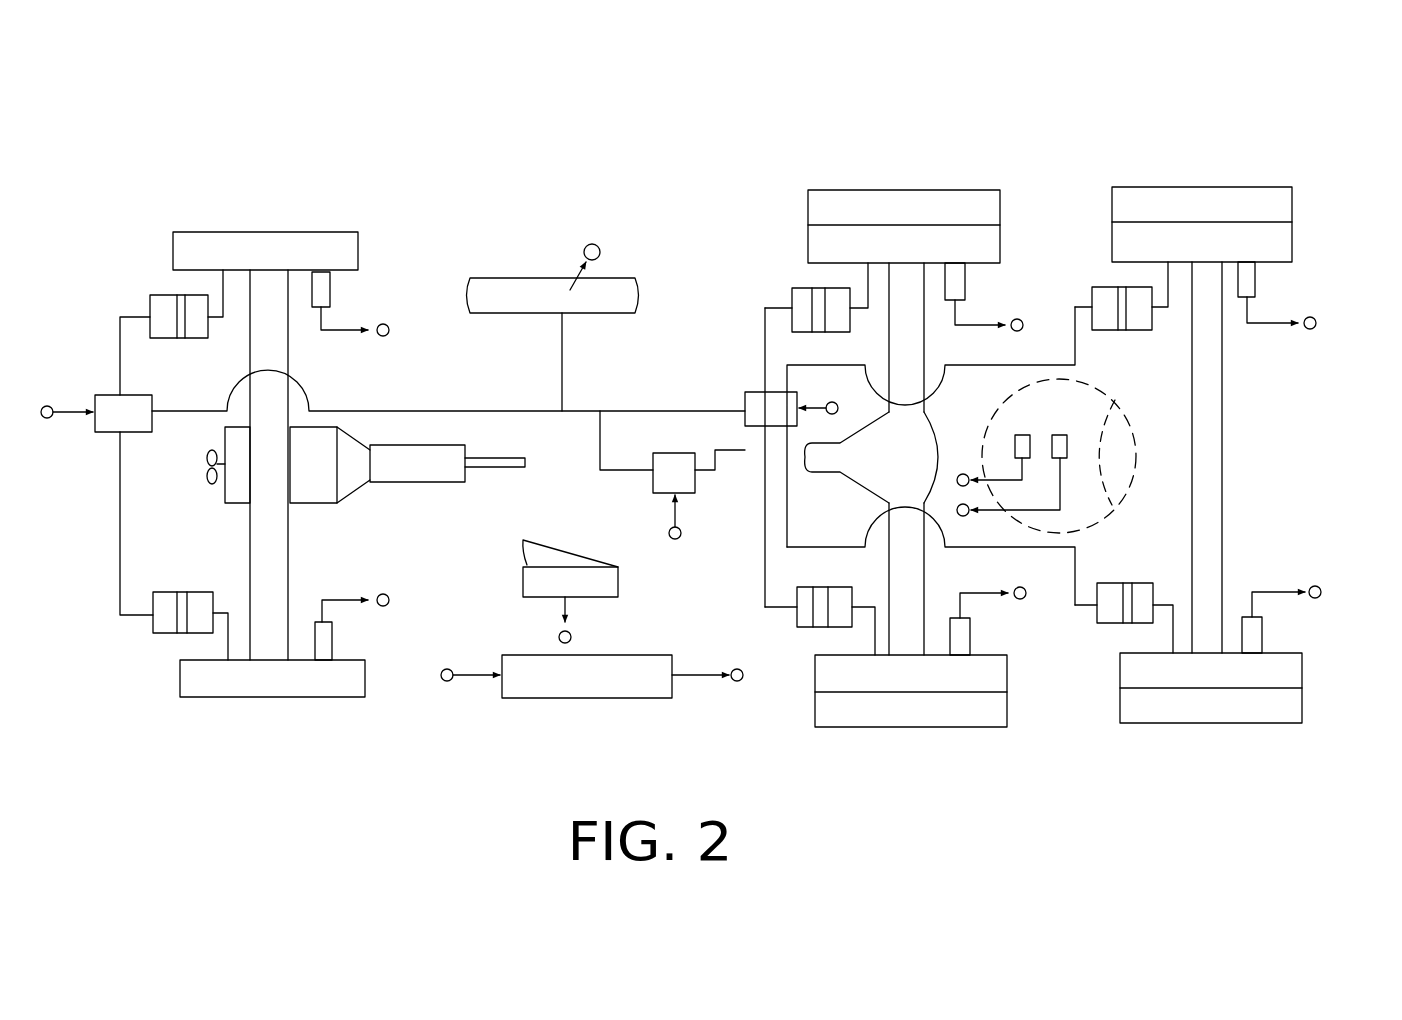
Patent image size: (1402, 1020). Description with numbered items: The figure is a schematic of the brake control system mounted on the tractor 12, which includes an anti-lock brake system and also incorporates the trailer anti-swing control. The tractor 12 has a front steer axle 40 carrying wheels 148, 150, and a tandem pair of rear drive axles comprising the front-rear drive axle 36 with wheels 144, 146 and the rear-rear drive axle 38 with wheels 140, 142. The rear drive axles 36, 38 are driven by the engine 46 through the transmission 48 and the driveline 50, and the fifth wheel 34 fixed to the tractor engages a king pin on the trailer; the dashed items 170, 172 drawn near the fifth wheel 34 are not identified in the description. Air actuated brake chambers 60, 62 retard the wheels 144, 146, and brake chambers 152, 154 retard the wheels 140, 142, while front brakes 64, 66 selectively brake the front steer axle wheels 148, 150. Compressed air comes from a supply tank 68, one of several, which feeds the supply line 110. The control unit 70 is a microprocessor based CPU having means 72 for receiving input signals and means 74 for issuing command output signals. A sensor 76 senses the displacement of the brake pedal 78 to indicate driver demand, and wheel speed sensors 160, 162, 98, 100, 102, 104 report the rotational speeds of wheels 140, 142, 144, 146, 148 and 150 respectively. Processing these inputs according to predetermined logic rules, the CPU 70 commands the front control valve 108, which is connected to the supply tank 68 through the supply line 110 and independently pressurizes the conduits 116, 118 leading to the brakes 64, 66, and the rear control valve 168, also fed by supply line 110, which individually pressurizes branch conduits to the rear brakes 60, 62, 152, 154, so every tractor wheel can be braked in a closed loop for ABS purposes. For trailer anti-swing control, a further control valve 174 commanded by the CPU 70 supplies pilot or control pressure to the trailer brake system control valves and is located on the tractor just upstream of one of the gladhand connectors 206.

The tractor 12 is at (620, 183).
The fifth wheel 34 is at (1085, 500).
The front-rear drive axle 36 is at (890, 182).
The rear-rear drive axle 38 is at (1219, 182).
The front steer axle 40 is at (323, 206).
The engine 46 is at (302, 490).
The transmission 48 is at (398, 473).
The driveline 50 is at (490, 458).
The air actuated brake chamber 60 is at (810, 288).
The air actuated brake chamber 62 is at (805, 587).
The front brake 64 is at (155, 338).
The front brake 66 is at (163, 592).
The supply tank 68 is at (532, 290).
The control unit 70 is at (637, 683).
The means for receiving input signals 72 is at (477, 680).
The means for issuing command output signals 74 is at (688, 672).
The sensor 76 is at (618, 582).
The brake pedal 78 is at (535, 545).
The wheel speed sensor 98 is at (965, 278).
The wheel speed sensor 100 is at (970, 633).
The wheel speed sensor 102 is at (332, 289).
The wheel speed sensor 104 is at (332, 638).
The front control valve 108 is at (113, 432).
The supply line 110 is at (500, 409).
The conduit 116 is at (120, 352).
The conduit 118 is at (120, 525).
The wheel 140 is at (1245, 200).
The wheel 142 is at (1243, 705).
The wheel 144 is at (915, 200).
The wheel 146 is at (958, 712).
The wheel 148 is at (262, 238).
The wheel 150 is at (287, 682).
The air actuated brake chamber 152 is at (1143, 330).
The air actuated brake chamber 154 is at (1108, 585).
The wheel speed sensor 160 is at (1255, 275).
The wheel speed sensor 162 is at (1262, 630).
The rear control valve 168 is at (742, 385).
The differential lock actuator 170 is at (1056, 435).
The position sensors 172 is at (1020, 433).
The control valve 174 is at (680, 453).
The gladhand connector 206 is at (728, 458).